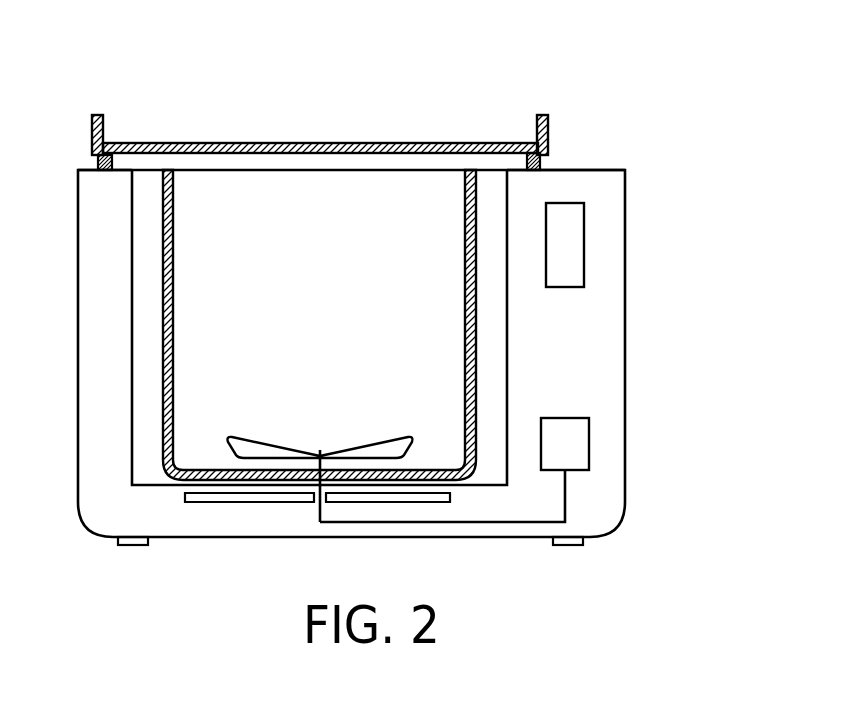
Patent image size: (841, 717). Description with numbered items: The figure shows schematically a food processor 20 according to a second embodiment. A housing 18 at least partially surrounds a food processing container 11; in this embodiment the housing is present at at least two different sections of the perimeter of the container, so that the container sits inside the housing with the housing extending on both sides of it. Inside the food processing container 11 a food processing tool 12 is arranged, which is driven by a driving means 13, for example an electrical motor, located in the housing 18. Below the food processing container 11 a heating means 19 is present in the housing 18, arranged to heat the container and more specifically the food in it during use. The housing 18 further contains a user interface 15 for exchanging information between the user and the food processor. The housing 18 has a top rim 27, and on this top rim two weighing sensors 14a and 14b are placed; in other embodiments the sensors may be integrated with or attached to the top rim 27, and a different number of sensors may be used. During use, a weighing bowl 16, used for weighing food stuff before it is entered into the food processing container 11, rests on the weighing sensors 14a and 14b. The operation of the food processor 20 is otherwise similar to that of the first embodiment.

The food processor 20 is at (686, 76).
The weighing bowl 16 is at (92, 125).
The weighing sensor 14a is at (98, 161).
The weighing sensor 14b is at (540, 165).
The top rim 27 is at (625, 170).
The food processing container 11 is at (173, 300).
The food processing tool 12 is at (381, 438).
The heating means 19 is at (212, 502).
The user interface 15 is at (572, 243).
The housing 18 is at (603, 343).
The driving means 13 is at (580, 443).